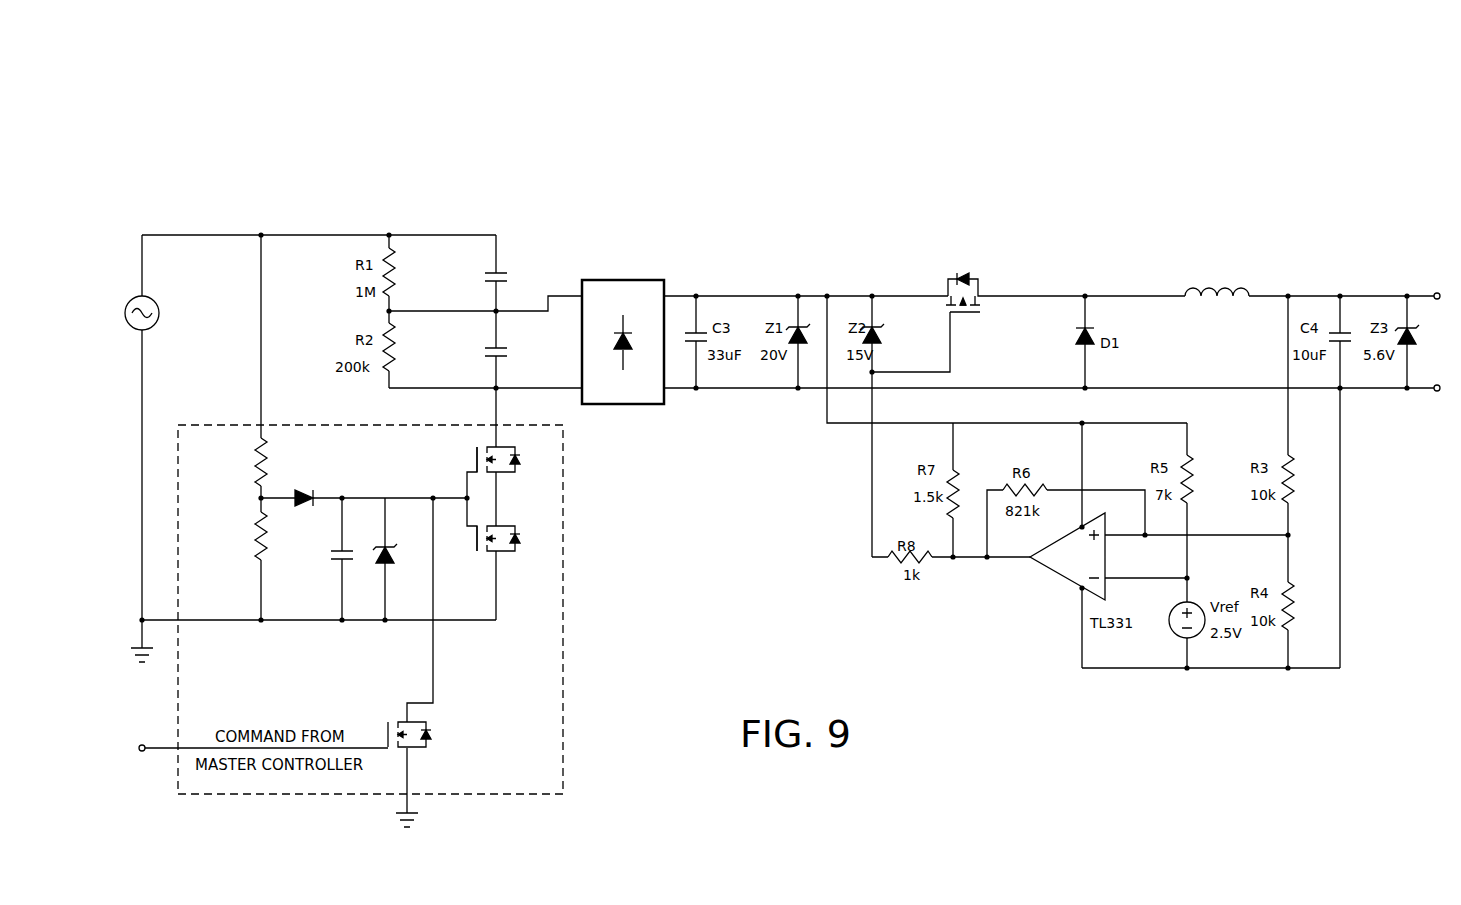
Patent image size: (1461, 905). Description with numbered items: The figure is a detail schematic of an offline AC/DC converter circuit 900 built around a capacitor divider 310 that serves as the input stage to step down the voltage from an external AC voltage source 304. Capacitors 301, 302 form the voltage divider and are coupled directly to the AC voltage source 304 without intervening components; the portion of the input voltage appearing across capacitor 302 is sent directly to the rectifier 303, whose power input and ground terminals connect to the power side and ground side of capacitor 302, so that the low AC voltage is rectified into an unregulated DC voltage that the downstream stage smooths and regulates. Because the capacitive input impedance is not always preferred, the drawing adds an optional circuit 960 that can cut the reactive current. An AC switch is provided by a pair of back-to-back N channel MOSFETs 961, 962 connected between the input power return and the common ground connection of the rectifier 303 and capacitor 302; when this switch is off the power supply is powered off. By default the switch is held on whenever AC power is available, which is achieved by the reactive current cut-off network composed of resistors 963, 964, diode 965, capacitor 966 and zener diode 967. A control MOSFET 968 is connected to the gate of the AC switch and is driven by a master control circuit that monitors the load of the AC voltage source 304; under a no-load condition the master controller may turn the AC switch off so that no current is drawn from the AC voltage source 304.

The capacitor divider 310 is at (335, 185).
The AC voltage source 304 is at (158, 427).
The capacitor 301 is at (511, 281).
The capacitor 302 is at (513, 365).
The rectifier 303 is at (631, 319).
The circuit 900 is at (1052, 276).
The optional circuit 960 is at (406, 609).
The N channel MOSFET 961 is at (513, 484).
The N channel MOSFET 962 is at (513, 561).
The resistor 963 is at (280, 463).
The resistor 964 is at (236, 563).
The diode 965 is at (364, 488).
The capacitor 966 is at (307, 579).
The zener diode 967 is at (381, 579).
The control MOSFET 968 is at (299, 774).